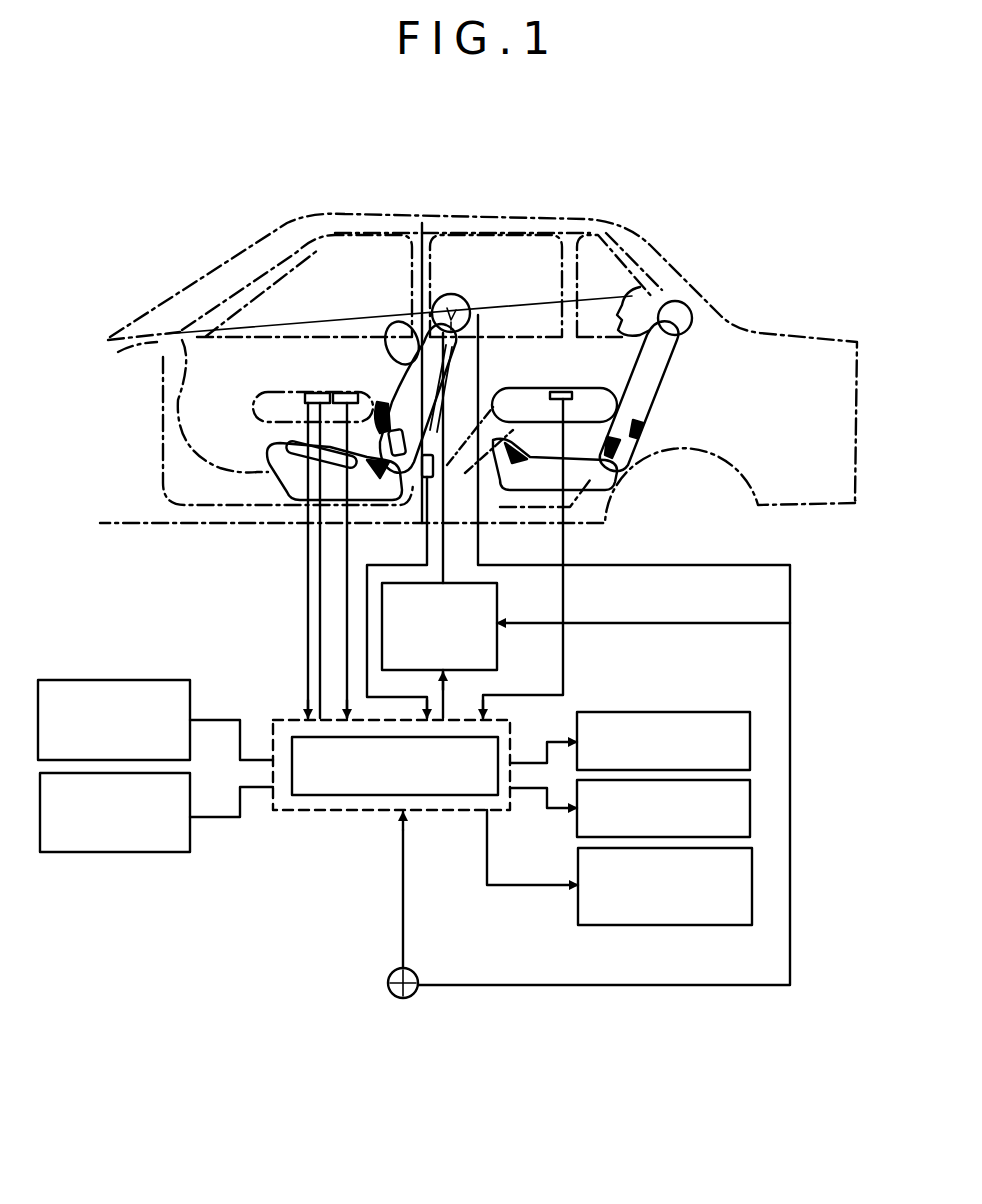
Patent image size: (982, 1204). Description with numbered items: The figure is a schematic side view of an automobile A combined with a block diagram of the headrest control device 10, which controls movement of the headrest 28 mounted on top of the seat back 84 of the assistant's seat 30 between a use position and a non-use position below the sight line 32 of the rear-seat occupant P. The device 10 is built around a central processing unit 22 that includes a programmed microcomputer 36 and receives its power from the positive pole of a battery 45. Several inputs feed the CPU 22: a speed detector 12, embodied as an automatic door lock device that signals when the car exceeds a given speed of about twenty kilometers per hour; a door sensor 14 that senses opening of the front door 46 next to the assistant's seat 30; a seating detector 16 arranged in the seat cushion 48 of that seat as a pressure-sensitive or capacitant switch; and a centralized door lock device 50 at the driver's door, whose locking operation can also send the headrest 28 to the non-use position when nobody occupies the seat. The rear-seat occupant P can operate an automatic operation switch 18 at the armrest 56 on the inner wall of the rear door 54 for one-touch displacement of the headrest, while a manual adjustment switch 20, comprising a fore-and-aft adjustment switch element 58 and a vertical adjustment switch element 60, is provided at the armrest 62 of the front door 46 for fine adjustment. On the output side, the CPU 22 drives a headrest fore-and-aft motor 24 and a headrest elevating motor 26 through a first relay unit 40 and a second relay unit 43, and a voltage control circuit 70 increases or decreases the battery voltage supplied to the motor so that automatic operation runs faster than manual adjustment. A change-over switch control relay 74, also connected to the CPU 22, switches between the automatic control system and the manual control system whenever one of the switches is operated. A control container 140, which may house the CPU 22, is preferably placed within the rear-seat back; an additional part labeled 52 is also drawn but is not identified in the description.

The automobile A is at (512, 212).
The rear-seat occupant P is at (668, 268).
The headrest control device 10 is at (838, 569).
The speed detector 12 is at (167, 670).
The door sensor 14 is at (440, 482).
The seating detector 16 is at (290, 442).
The automatic operation switch 18 is at (563, 390).
The manual adjustment switch 20 is at (313, 390).
The central processing unit 22 is at (313, 812).
The headrest fore-and-aft motor 24 is at (454, 388).
The headrest elevating motor 26 is at (472, 301).
The headrest 28 is at (452, 294).
The assistant's seat 30 is at (380, 358).
The sight line 32 is at (519, 312).
The microcomputer 36 is at (370, 797).
The first relay unit 40 is at (740, 712).
The second relay unit 43 is at (748, 794).
The battery 45 is at (414, 970).
The front door 46 is at (268, 332).
The seat cushion 48 is at (282, 478).
The centralized door lock device 50 is at (185, 852).
The rear seat back 52 is at (664, 423).
The rear door 54 is at (507, 336).
The armrest 56 is at (517, 386).
The fore-and-aft adjustment switch element 58 is at (346, 390).
The vertical adjustment switch element 60 is at (296, 384).
The armrest 62 is at (262, 388).
The voltage control circuit 70 is at (497, 593).
The change-over switch control relay 74 is at (745, 926).
The seat back 84 is at (433, 406).
The control container 140 is at (400, 586).